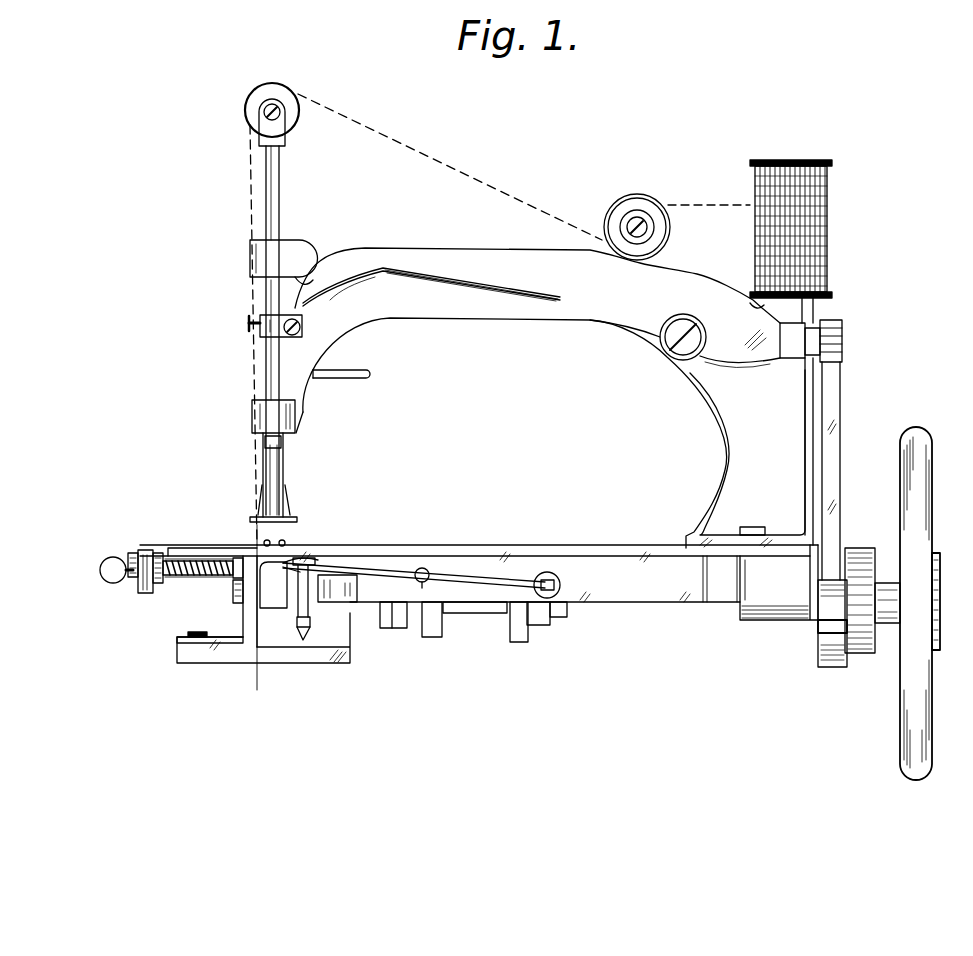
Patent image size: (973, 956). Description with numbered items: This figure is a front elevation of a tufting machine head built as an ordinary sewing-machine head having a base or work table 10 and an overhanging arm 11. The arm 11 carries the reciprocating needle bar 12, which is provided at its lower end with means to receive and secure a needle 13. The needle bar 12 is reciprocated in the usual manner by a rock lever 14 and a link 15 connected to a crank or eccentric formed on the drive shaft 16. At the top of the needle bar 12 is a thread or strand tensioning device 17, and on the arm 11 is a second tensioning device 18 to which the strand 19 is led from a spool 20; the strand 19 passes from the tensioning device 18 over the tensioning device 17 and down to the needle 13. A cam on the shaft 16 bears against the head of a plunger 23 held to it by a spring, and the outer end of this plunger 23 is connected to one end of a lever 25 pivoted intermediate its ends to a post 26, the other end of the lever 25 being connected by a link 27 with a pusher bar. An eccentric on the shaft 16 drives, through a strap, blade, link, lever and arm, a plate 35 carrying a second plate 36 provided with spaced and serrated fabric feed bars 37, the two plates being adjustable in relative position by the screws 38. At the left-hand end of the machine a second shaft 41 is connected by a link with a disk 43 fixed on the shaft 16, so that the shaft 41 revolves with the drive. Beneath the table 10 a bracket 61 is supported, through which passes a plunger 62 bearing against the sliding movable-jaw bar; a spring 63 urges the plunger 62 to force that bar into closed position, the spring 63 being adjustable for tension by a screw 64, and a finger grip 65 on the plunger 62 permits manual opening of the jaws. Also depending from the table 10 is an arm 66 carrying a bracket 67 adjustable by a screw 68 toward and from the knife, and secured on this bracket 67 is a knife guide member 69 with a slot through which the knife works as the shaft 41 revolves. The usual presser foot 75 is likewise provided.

The base or work table 10 is at (583, 530).
The arm 11 is at (460, 318).
The reciprocating needle bar 12 is at (281, 205).
The needle 13 is at (283, 475).
The rock lever 14 is at (488, 248).
The link 15 is at (841, 398).
The drive shaft 16 is at (887, 622).
The thread or strand tensioning device 17 is at (253, 118).
The second tensioning device 18 is at (620, 218).
The strand 19 is at (718, 205).
The spool 20 is at (832, 253).
The plunger 23 is at (562, 588).
The lever 25 is at (476, 542).
The post 26 is at (258, 534).
The link 27 is at (357, 548).
The plate 35 is at (345, 547).
The second plate 36 is at (330, 604).
The fabric feed bars 37 is at (285, 542).
The screws 38 is at (306, 630).
The second shaft 41 is at (396, 630).
The disk 43 is at (432, 638).
The bracket 61 is at (143, 590).
The plunger 62 is at (205, 576).
The spring 63 is at (178, 560).
The screw 64 is at (238, 554).
The finger grip 65 is at (112, 556).
The arm 66 is at (310, 667).
The bracket 67 is at (190, 636).
The screw 68 is at (195, 640).
The knife guide member 69 is at (277, 600).
The presser foot 75 is at (255, 514).